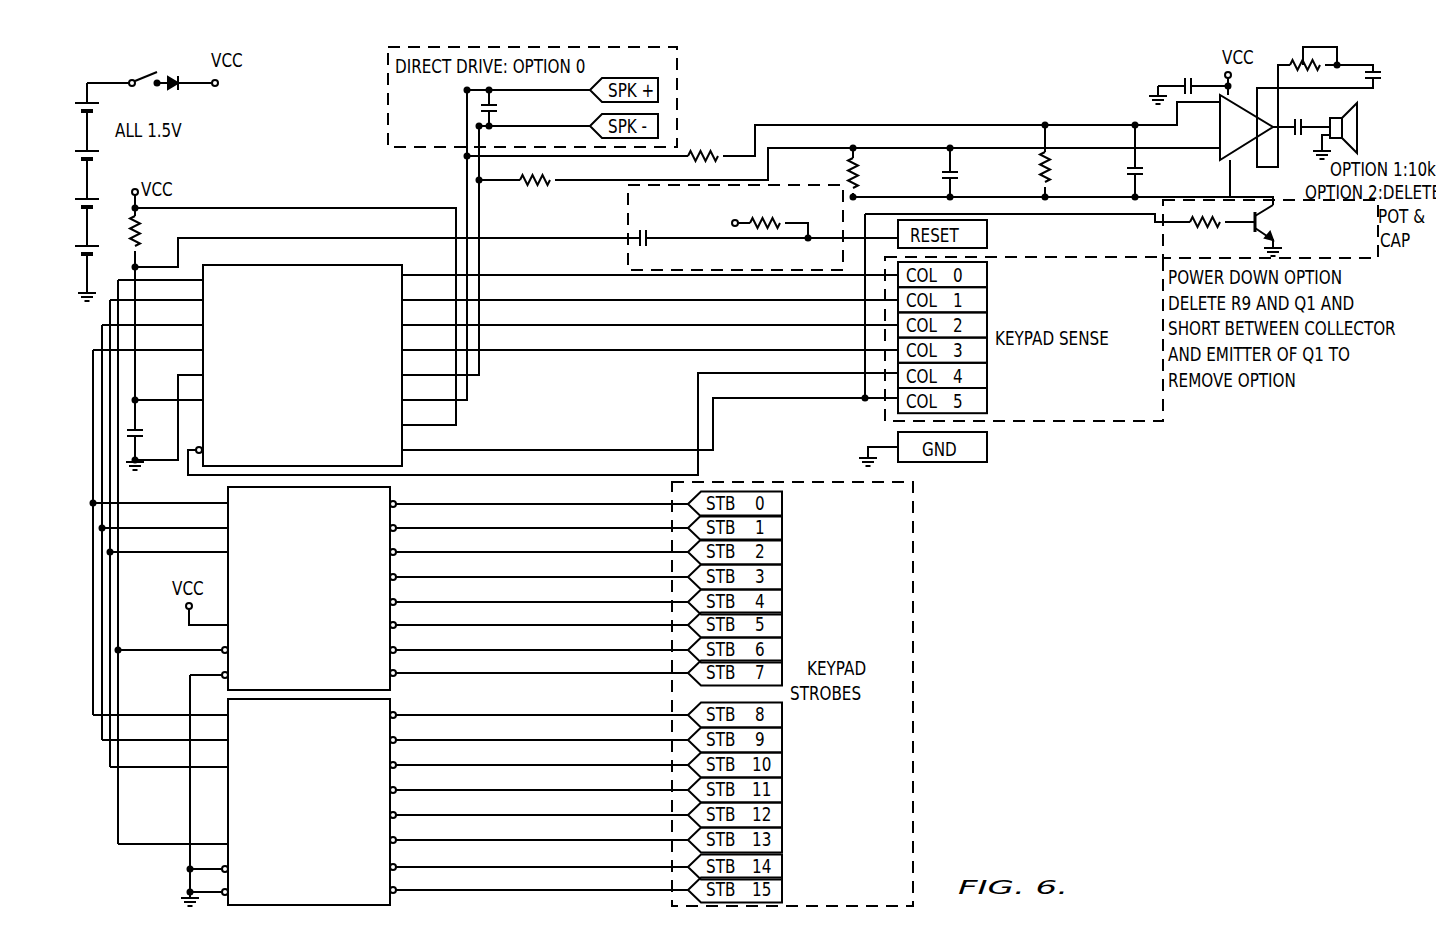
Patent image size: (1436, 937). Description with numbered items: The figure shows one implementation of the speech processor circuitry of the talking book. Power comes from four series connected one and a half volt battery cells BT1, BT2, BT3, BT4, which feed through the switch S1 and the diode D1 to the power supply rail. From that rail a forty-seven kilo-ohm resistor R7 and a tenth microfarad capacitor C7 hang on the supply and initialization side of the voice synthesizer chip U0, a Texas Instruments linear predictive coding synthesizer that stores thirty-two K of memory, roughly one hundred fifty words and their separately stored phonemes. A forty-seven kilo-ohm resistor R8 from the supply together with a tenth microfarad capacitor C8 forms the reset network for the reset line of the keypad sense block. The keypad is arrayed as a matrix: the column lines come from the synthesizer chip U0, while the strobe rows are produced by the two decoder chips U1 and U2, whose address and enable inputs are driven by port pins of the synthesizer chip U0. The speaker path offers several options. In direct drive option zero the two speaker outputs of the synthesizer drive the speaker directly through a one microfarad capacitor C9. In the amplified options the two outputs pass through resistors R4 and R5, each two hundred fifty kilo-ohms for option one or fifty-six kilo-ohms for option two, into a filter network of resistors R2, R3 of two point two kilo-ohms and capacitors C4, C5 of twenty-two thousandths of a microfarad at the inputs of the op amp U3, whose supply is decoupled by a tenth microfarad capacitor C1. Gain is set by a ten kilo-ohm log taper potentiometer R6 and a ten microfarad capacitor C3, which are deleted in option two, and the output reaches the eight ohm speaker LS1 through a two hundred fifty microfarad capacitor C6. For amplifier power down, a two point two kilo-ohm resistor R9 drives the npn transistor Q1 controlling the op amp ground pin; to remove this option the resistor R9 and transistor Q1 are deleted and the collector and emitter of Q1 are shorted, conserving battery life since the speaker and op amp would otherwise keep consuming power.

The switch S1 is at (145, 68).
The diode D1 is at (187, 82).
The battery BT1 is at (105, 250).
The battery BT2 is at (101, 206).
The battery BT3 is at (105, 155).
The battery BT4 is at (105, 107).
The resistor R7 is at (151, 238).
The capacitor C7 is at (152, 424).
The capacitor C8 is at (653, 235).
The voice synthesizer chip U0 is at (306, 362).
The decoder chip U1 is at (315, 588).
The decoder chip U2 is at (315, 801).
The op amp U3 is at (1246, 134).
The capacitor C9 is at (521, 108).
The resistor R4 is at (849, 192).
The resistor R5 is at (843, 118).
The resistor R2 is at (871, 172).
The resistor R3 is at (1064, 161).
The capacitor C4 is at (1161, 161).
The capacitor C5 is at (976, 172).
The resistor R8 is at (756, 216).
The capacitor C1 is at (1188, 76).
The potentiometer R6 is at (1322, 66).
The capacitor C3 is at (1348, 82).
The capacitor C6 is at (1306, 138).
The speaker LS1 is at (1351, 128).
The transistor Q1 is at (1305, 229).
The resistor R9 is at (1060, 233).